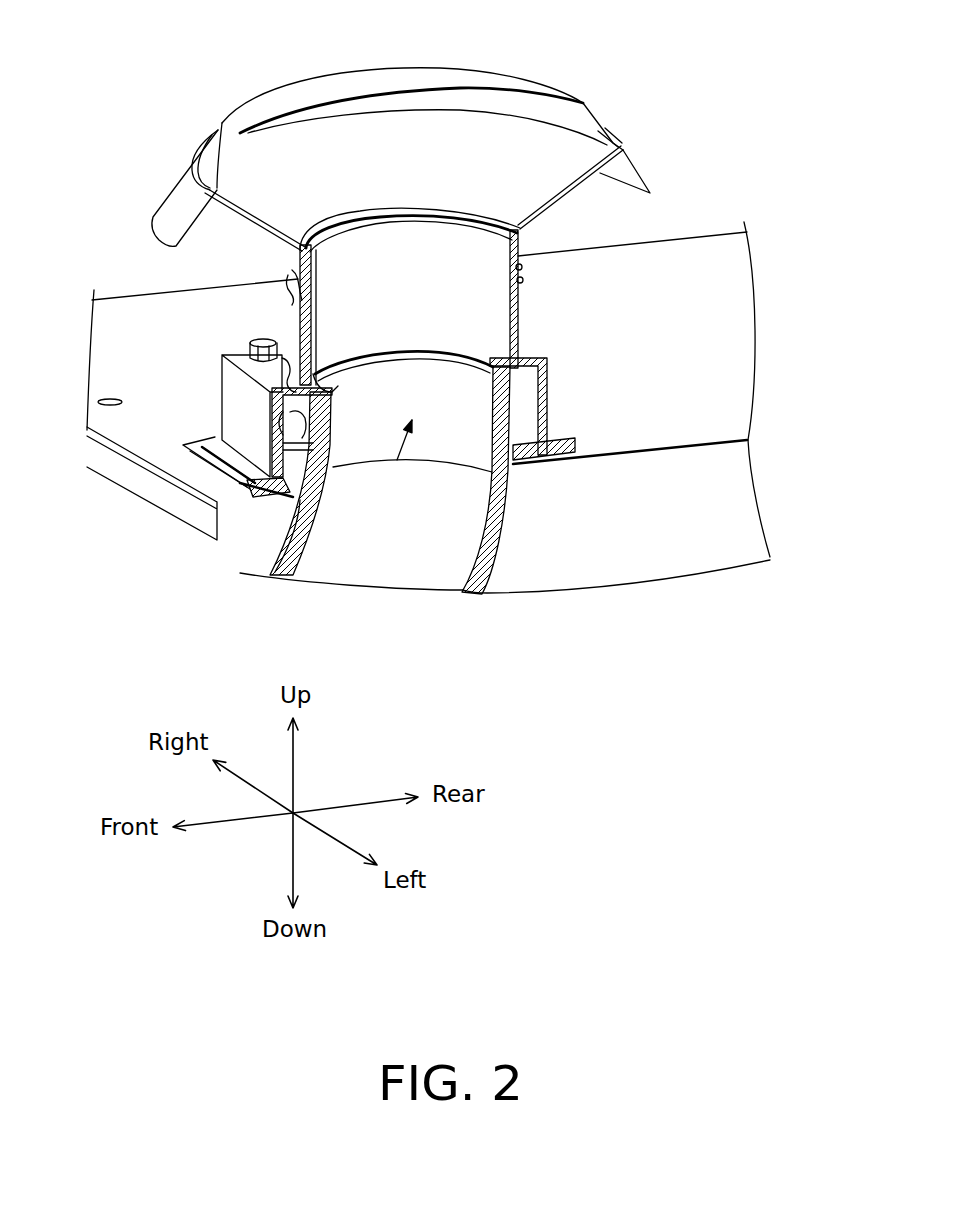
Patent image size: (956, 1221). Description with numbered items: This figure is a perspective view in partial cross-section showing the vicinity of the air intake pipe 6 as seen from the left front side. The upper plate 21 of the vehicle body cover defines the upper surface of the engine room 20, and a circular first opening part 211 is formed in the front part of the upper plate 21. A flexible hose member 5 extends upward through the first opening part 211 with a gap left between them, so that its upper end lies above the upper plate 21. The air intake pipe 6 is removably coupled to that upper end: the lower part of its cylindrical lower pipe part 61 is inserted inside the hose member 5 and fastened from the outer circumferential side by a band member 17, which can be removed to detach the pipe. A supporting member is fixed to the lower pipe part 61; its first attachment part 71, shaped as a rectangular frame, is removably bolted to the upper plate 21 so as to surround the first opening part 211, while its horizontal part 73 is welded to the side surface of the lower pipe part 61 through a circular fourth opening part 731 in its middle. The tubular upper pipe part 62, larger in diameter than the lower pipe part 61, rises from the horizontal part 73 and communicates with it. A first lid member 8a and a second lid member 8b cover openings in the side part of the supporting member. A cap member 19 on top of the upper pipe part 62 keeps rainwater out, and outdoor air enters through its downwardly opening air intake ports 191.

The cap member 19 is at (586, 101).
The air intake ports 191 is at (250, 218).
The upper plate 21 is at (713, 250).
The engine room 20 is at (733, 503).
The first opening part 211 is at (240, 573).
The upper pipe part 62 is at (517, 313).
The fourth opening part 731 is at (338, 383).
The horizontal part 73 is at (550, 382).
The first lid member 8a is at (550, 413).
The second lid member 8b is at (230, 390).
The first attachment part 71 is at (167, 457).
The hose member 5 is at (497, 543).
The band member 17 is at (311, 492).
The lower pipe part 61 is at (453, 440).
The air intake pipe 6 is at (400, 465).